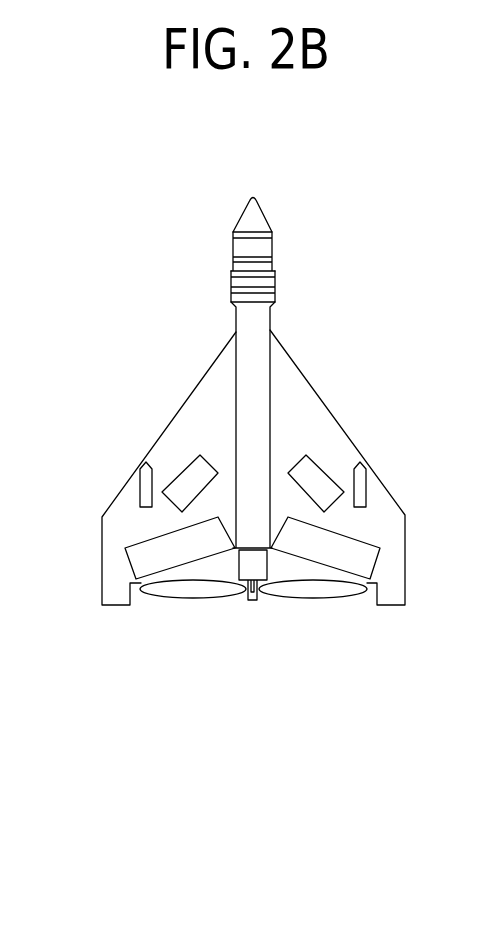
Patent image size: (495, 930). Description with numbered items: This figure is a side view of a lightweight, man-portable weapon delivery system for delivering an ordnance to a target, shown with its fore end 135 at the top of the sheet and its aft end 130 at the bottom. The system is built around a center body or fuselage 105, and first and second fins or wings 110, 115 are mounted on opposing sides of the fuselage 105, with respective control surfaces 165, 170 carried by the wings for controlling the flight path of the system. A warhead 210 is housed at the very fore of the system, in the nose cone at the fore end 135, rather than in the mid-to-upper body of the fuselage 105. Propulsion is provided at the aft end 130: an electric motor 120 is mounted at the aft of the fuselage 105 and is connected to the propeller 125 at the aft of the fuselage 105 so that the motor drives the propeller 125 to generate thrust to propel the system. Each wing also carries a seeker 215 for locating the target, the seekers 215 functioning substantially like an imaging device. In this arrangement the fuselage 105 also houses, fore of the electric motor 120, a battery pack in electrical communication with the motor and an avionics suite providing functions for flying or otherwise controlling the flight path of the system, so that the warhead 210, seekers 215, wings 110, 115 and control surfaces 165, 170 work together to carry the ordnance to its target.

The fuselage 105 is at (272, 317).
The first fin or wing 110 is at (187, 393).
The second fin or wing 115 is at (302, 372).
The electric motor 120 is at (258, 562).
The propeller 125 is at (185, 600).
The aft end 130 is at (252, 643).
The fore end 135 is at (250, 153).
The control surface 165 is at (147, 543).
The control surface 170 is at (378, 563).
The warhead 210 is at (265, 247).
The seeker 215 is at (140, 487).